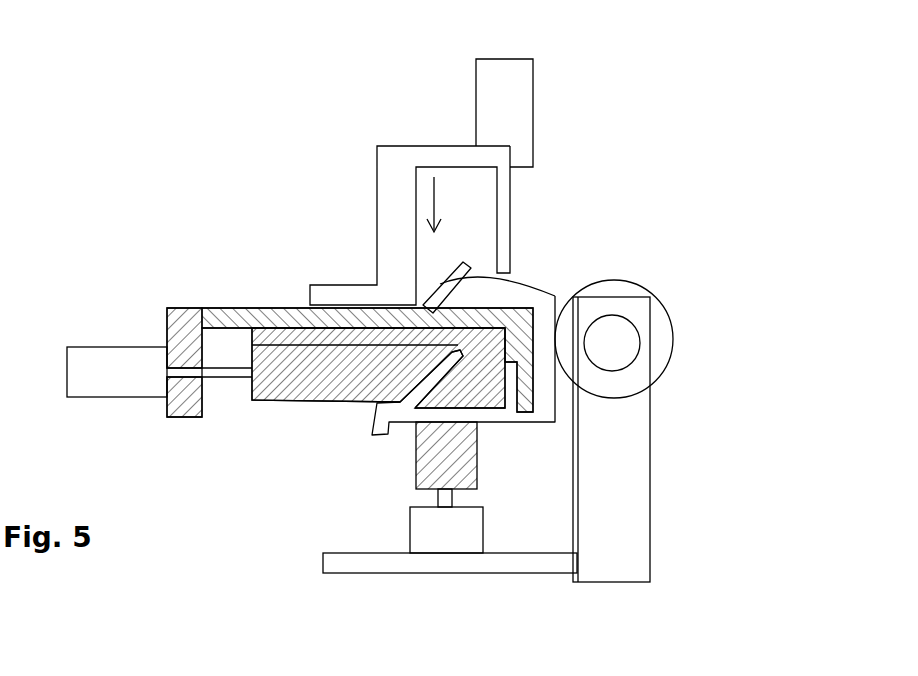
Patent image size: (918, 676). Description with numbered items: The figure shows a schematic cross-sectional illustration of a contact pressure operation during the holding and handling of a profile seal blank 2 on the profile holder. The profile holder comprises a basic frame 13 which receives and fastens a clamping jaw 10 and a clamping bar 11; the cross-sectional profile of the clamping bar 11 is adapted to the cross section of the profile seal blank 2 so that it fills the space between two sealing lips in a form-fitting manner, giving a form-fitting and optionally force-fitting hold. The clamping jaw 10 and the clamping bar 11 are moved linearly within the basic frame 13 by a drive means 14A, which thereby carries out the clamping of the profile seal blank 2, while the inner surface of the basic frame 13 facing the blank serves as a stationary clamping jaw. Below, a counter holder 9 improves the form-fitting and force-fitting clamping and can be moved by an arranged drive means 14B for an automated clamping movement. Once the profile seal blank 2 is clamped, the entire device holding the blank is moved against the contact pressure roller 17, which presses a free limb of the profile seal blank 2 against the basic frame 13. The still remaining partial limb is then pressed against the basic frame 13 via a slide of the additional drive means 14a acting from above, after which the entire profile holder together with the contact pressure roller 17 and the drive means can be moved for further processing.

The profile seal blank 2 is at (575, 298).
The counter holder 9 is at (462, 460).
The clamping jaw 10 is at (290, 384).
The clamping bar 11 is at (478, 344).
The basic frame 13 is at (243, 322).
The drive means 14a is at (512, 117).
The drive means 14A is at (90, 362).
The drive means 14B is at (463, 528).
The contact pressure roller 17 is at (663, 348).